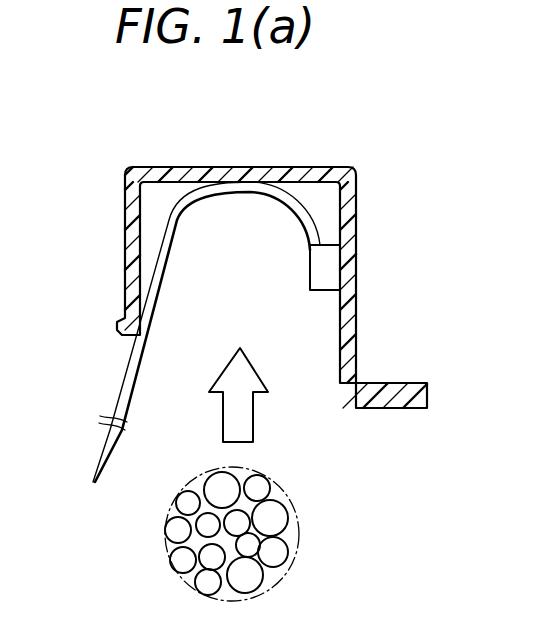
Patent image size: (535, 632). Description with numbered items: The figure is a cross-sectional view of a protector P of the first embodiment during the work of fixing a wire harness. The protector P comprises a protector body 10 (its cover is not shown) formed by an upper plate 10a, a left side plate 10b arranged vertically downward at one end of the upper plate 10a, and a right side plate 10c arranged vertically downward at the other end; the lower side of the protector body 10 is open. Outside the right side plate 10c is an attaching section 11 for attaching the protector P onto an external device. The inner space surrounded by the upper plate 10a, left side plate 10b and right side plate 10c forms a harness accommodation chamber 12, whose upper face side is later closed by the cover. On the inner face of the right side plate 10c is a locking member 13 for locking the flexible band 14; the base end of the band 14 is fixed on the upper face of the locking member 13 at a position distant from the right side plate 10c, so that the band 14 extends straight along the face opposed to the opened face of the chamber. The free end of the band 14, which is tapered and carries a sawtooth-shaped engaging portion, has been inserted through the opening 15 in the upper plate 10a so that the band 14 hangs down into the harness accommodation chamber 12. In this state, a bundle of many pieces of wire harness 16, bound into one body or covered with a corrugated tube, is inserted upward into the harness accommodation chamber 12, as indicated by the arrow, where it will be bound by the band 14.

The protector P is at (114, 161).
The protector body 10 is at (168, 160).
The upper plate 10a is at (215, 169).
The left side plate 10b is at (128, 242).
The right side plate 10c is at (351, 313).
The attaching section 11 is at (380, 405).
The harness accommodation chamber 12 is at (262, 313).
The locking member 13 is at (332, 272).
The band 14 is at (130, 367).
The opening 15 is at (303, 168).
The wire harness 16 is at (260, 577).